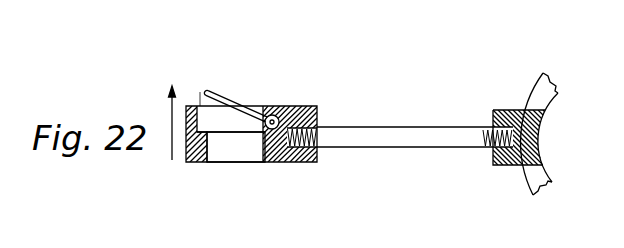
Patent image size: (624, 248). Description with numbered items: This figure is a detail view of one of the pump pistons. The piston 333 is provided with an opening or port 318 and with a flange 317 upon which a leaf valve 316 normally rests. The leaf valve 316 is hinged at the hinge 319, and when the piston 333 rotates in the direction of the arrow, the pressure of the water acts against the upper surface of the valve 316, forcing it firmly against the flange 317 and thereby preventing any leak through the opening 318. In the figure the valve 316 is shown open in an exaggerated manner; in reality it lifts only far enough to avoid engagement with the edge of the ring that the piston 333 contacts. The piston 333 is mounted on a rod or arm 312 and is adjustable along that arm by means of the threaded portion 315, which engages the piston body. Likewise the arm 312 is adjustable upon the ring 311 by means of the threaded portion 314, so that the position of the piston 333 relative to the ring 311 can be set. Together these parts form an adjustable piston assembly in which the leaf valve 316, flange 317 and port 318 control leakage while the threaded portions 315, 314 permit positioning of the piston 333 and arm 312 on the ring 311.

The ring 311 is at (510, 118).
The rod or arm 312 is at (430, 132).
The threaded portion 314 is at (485, 148).
The threaded portion 315 is at (317, 125).
The leaf valve 316 is at (217, 95).
The flange 317 is at (222, 125).
The opening or port 318 is at (248, 157).
The hinge 319 is at (277, 113).
The piston 333 is at (280, 163).